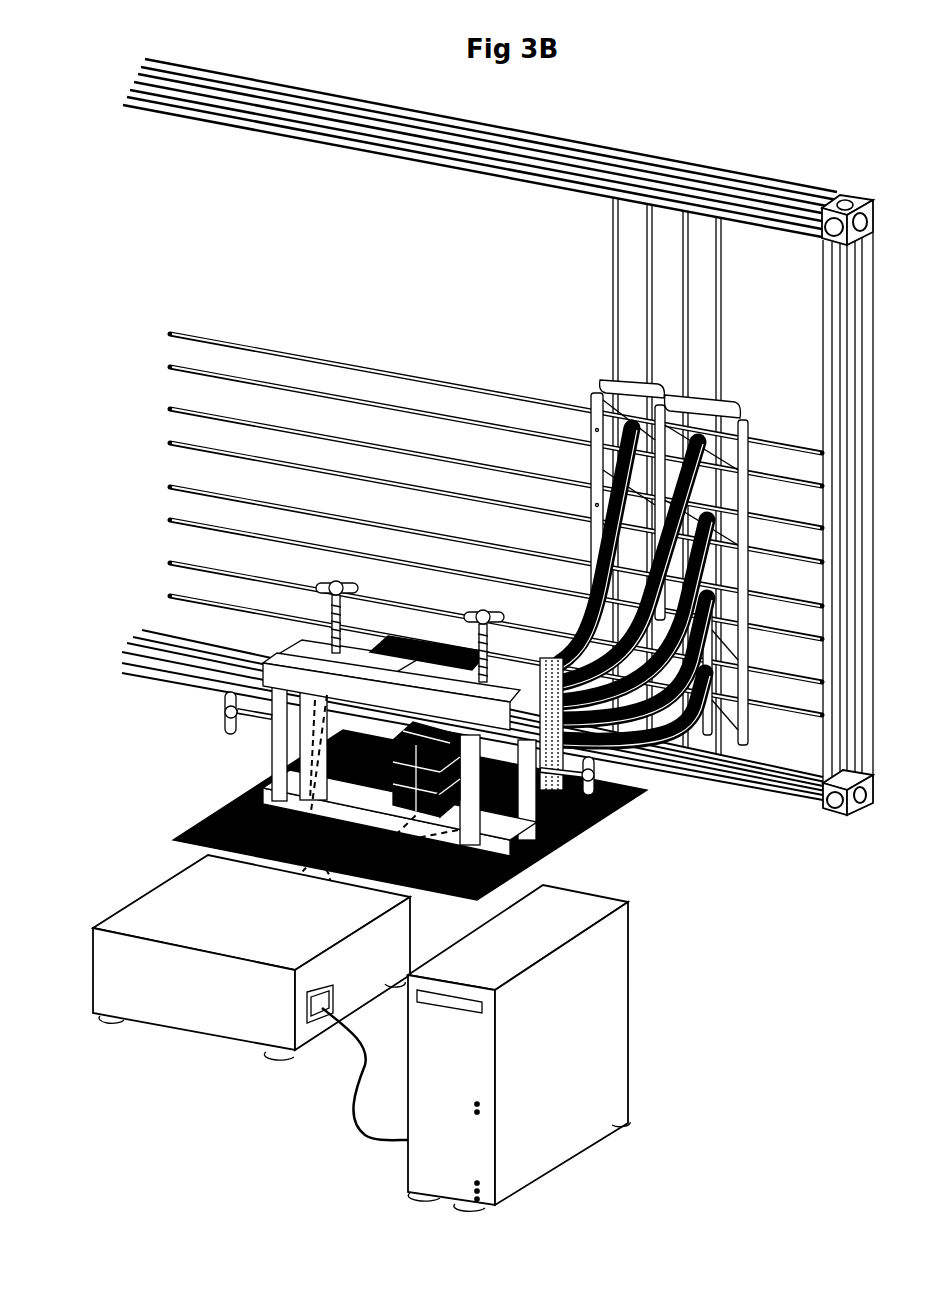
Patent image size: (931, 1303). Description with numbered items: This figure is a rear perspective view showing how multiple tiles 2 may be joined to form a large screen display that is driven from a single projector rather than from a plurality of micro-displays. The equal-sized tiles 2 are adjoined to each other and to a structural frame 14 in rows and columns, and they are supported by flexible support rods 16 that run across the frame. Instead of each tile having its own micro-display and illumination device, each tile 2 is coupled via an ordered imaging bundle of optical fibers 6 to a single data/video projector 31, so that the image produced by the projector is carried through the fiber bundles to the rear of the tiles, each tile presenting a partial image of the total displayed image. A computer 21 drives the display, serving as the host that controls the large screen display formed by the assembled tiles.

The structural frame 14 is at (333, 152).
The flexible support rods 16 is at (783, 720).
The tile 2 is at (586, 387).
The ordered imaging bundle of optical fibers 6 is at (658, 742).
The data/video projector 31 is at (80, 979).
The computer 21 is at (645, 1054).